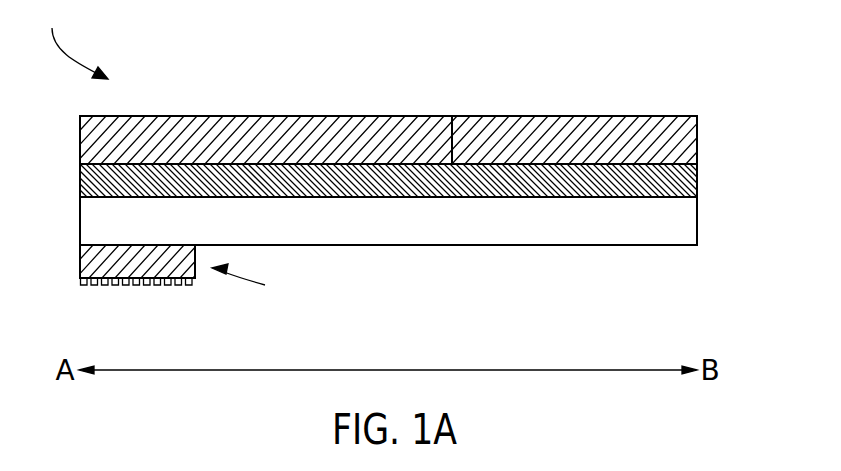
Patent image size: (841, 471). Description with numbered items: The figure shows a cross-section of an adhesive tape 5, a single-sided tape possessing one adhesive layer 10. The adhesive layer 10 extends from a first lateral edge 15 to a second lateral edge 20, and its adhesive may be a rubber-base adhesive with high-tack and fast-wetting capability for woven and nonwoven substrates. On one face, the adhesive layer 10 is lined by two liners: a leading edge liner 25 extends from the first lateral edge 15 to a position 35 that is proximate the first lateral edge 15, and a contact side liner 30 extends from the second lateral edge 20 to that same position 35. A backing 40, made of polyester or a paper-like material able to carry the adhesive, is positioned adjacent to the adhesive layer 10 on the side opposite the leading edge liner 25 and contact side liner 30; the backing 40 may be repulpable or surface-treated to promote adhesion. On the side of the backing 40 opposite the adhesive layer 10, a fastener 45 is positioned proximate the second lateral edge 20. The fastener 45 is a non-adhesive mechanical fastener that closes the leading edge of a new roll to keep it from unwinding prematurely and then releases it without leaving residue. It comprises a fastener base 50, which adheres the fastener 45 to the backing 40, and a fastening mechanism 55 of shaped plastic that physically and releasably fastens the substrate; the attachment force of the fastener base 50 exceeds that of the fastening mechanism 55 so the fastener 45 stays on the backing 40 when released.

The adhesive tape 5 is at (77, 41).
The adhesive layer 10 is at (686, 182).
The first lateral edge 15 is at (698, 143).
The second lateral edge 20 is at (80, 180).
The leading edge liner 25 is at (580, 137).
The contact side liner 30 is at (220, 125).
The position 35 is at (458, 134).
The backing 40 is at (685, 222).
The fastener 45 is at (251, 281).
The fastener base 50 is at (92, 263).
The fastening mechanism 55 is at (125, 283).